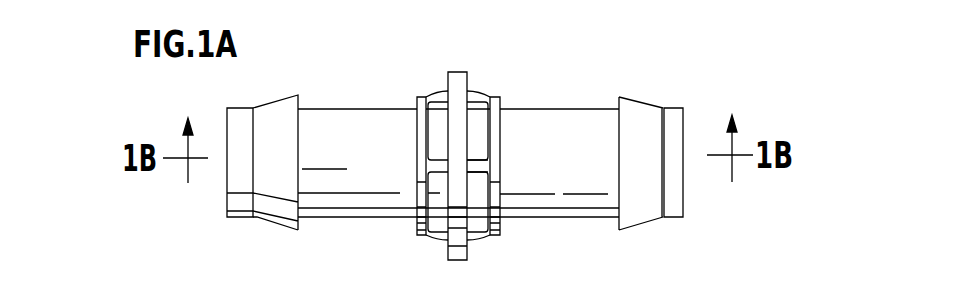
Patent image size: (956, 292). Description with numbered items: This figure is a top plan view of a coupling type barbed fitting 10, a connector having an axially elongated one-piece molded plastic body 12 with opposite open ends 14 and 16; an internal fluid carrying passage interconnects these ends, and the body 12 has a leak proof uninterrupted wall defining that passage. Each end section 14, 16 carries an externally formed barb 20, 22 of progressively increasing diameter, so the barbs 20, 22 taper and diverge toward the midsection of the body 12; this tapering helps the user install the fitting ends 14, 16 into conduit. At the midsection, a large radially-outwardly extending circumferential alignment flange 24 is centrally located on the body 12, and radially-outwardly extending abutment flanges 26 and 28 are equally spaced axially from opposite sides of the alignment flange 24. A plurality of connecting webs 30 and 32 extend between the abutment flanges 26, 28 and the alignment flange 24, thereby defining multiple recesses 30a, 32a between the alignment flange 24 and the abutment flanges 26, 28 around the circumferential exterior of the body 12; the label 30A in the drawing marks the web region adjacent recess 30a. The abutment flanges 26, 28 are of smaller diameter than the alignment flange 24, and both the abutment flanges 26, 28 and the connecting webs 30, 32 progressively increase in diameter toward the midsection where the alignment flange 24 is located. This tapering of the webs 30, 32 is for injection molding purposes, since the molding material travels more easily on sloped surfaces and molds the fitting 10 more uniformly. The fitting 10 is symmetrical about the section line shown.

The coupling fitting 10 is at (573, 52).
The body 12 is at (568, 122).
The open end 14 is at (243, 216).
The open end 16 is at (668, 218).
The barb 20 is at (297, 97).
The barb 22 is at (642, 113).
The alignment flange 24 is at (463, 70).
The abutment flange 26 is at (417, 97).
The abutment flange 28 is at (497, 140).
The connecting web 30 is at (442, 102).
The upper arm portion 30A is at (435, 128).
The recess 30a is at (422, 205).
The connecting web 32 is at (473, 102).
The recess 32a is at (483, 150).